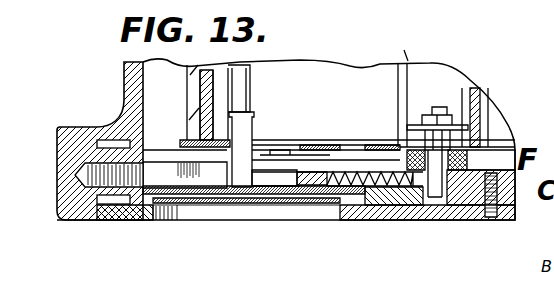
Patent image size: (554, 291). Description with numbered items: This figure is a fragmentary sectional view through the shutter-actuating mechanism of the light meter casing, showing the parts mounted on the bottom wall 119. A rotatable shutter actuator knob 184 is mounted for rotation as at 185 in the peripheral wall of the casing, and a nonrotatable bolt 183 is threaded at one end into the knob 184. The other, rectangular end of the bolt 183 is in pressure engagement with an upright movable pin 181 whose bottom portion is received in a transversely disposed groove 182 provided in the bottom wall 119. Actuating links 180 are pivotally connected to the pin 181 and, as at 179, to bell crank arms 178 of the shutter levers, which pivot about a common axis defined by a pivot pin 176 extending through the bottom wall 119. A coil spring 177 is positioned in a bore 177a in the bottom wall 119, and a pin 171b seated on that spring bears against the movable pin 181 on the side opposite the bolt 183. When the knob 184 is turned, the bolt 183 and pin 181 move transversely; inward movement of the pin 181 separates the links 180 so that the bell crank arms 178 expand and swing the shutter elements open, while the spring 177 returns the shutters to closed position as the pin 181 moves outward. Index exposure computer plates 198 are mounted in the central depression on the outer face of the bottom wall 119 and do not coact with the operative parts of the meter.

The shutter actuator knob 184 is at (72, 132).
The rotatable mounting 185 is at (112, 196).
The nonrotatable bolt 183 is at (165, 162).
The upright movable pin 181 is at (243, 122).
The transversely disposed groove 182 is at (308, 172).
The pivotal connection 179 is at (368, 150).
The actuating link 180 is at (380, 151).
The bell crank arm 178 is at (392, 147).
The pivot pin 176 is at (450, 88).
The slider end 171b is at (305, 187).
The bore 177a is at (368, 184).
The coil spring 177 is at (398, 188).
The index exposure computer plates 198 is at (276, 205).
The bottom wall 119 is at (380, 197).